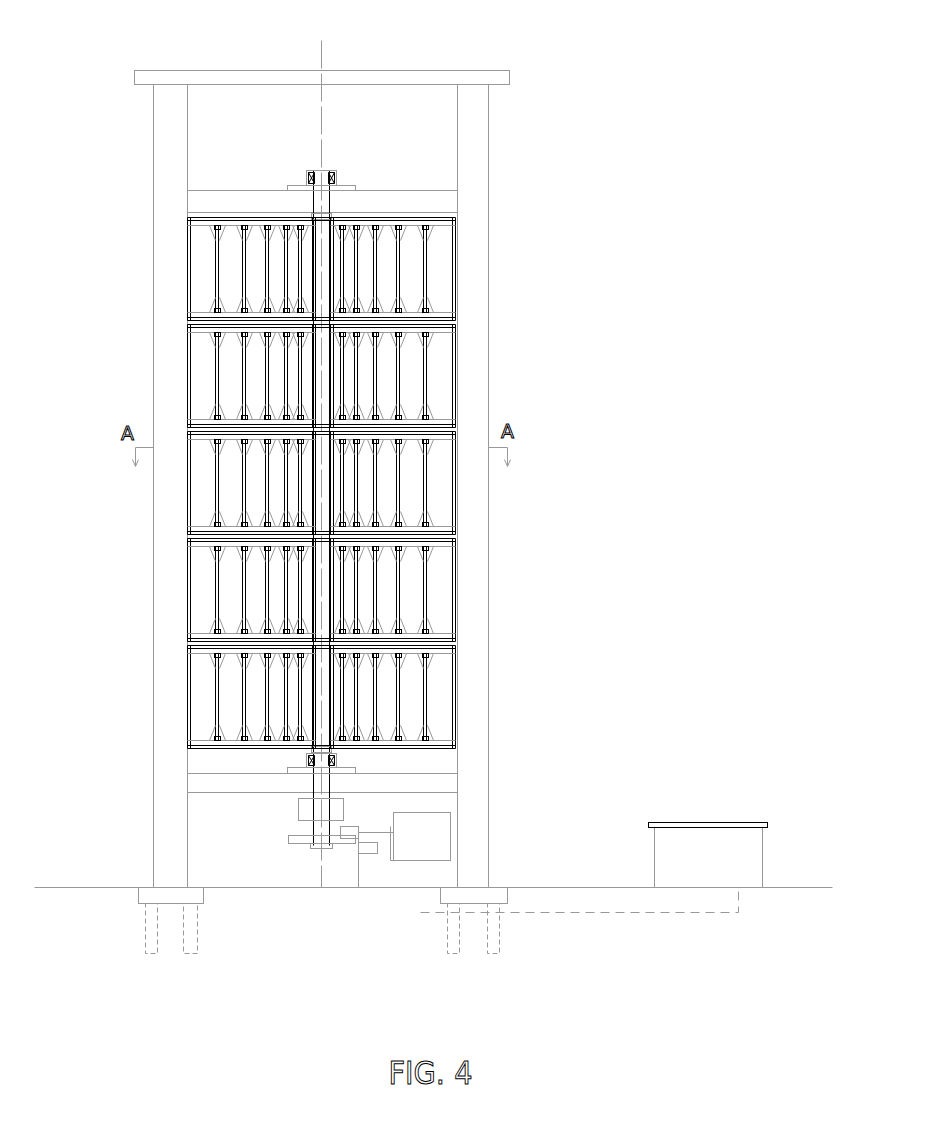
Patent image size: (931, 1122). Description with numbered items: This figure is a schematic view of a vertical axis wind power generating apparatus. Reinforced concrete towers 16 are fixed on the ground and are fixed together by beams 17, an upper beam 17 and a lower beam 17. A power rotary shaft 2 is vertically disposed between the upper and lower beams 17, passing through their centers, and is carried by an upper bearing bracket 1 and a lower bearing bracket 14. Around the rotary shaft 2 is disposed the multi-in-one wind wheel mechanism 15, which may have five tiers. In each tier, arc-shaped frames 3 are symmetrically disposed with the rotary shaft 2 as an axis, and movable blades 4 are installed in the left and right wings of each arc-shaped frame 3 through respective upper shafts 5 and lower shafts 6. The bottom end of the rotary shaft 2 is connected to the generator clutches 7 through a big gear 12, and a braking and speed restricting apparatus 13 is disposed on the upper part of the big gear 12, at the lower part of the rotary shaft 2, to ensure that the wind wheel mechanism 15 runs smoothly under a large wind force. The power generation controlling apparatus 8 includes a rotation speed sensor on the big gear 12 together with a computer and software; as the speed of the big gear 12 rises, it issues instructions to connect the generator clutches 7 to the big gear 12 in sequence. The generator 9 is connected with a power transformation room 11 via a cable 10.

The upper bearing bracket 1 is at (334, 176).
The rotary shaft 2 is at (321, 272).
The arc-shaped frame 3 is at (396, 311).
The movable blade 4 is at (437, 365).
The upper shaft 5 is at (427, 430).
The lower shaft 6 is at (427, 528).
The generator clutch 7 is at (342, 828).
The power generation controlling apparatus 8 is at (377, 845).
The generator 9 is at (432, 853).
The cable 10 is at (593, 908).
The power transformation room 11 is at (718, 843).
The big gear 12 is at (287, 838).
The braking and speed restricting apparatus 13 is at (297, 812).
The lower bearing bracket 14 is at (300, 752).
The wind wheel mechanism 15 is at (228, 404).
The tower 16 is at (173, 257).
The beam 17 is at (220, 197).